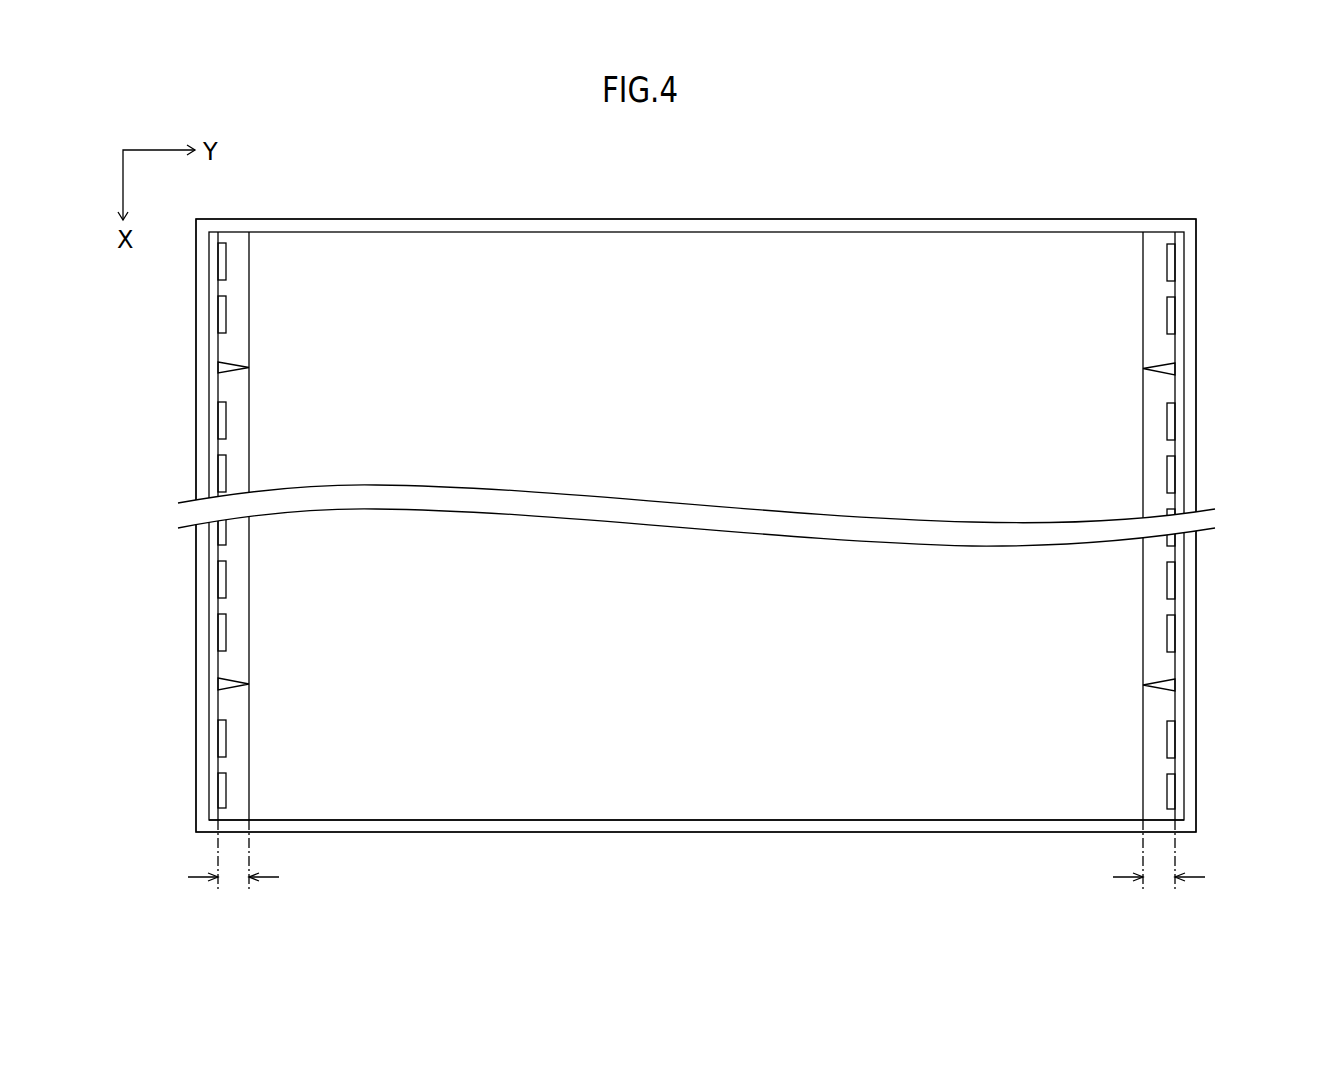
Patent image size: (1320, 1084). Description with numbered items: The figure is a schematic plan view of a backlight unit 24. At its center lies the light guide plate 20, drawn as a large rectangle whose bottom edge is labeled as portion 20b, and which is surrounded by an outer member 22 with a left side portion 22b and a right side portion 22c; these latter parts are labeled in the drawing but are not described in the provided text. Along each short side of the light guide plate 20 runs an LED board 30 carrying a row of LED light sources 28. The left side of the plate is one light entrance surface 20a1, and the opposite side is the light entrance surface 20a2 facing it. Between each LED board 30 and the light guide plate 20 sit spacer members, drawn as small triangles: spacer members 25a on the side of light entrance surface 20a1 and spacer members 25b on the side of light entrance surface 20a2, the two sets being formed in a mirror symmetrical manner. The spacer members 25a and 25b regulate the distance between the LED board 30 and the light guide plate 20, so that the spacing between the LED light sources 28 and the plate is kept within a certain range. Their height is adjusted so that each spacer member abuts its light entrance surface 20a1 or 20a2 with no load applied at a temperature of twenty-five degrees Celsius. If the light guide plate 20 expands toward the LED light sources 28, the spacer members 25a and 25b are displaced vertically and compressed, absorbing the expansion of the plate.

The light guide plate 20 is at (403, 255).
The light entrance surface 20a1 is at (243, 773).
The light entrance surface 20a2 is at (1146, 773).
The bottom edge of panel 20b is at (856, 802).
The frame 22 is at (583, 219).
The left side portion of frame 22b is at (207, 404).
The right side portion of frame 22c is at (1188, 404).
The backlight unit 24 is at (729, 200).
The spacer members 25a is at (228, 685).
The spacer members 25b is at (1165, 686).
The LED light sources 28 is at (222, 632).
The LED board 30 is at (215, 578).